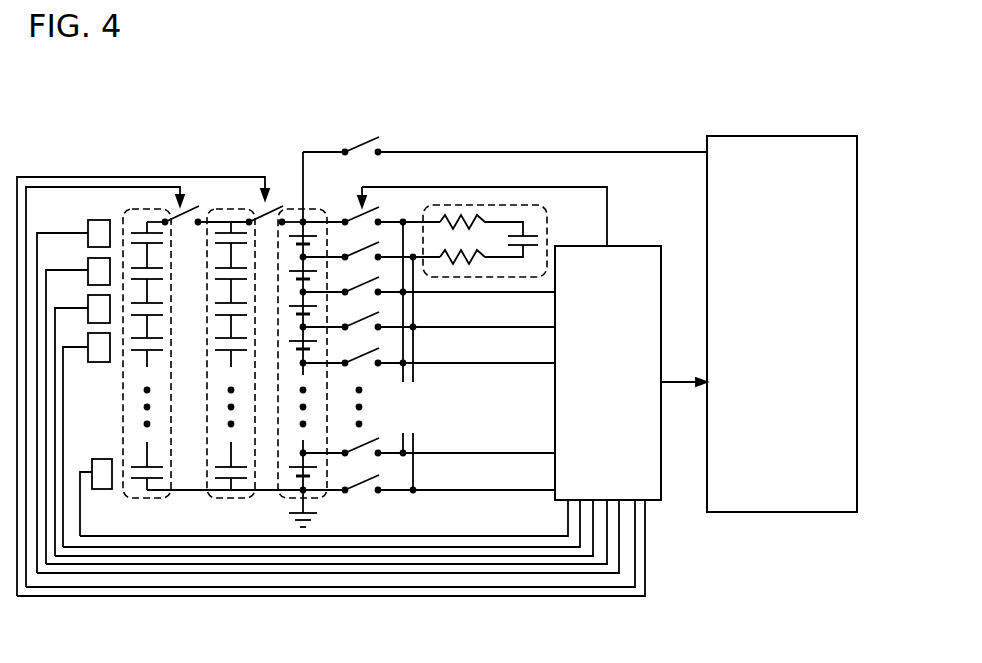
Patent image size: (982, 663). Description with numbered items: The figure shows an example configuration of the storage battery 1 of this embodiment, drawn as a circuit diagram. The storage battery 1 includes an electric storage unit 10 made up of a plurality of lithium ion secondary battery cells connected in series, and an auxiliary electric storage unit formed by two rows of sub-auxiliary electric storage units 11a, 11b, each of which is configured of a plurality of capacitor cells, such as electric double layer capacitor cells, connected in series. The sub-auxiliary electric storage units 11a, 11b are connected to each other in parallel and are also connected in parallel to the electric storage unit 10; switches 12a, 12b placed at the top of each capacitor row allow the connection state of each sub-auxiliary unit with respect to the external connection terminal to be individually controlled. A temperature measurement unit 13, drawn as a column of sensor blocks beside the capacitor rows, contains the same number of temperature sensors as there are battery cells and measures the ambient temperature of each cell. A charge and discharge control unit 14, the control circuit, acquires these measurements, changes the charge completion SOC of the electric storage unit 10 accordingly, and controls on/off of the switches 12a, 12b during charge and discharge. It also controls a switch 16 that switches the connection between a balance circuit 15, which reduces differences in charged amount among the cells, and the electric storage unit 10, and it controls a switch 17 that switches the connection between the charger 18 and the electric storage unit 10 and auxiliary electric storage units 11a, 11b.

The storage battery 1 is at (83, 85).
The electric storage unit 10 is at (312, 208).
The sub-auxiliary electric storage unit 11a is at (227, 208).
The sub-auxiliary electric storage unit 11b is at (143, 208).
The switch 12a is at (276, 210).
The switch 12b is at (186, 212).
The temperature measurement unit 13 is at (100, 220).
The charge and discharge control unit 14 is at (641, 246).
The balance circuit 15 is at (493, 205).
The switch 16 is at (368, 203).
The switch 17 is at (359, 143).
The charger 18 is at (830, 136).